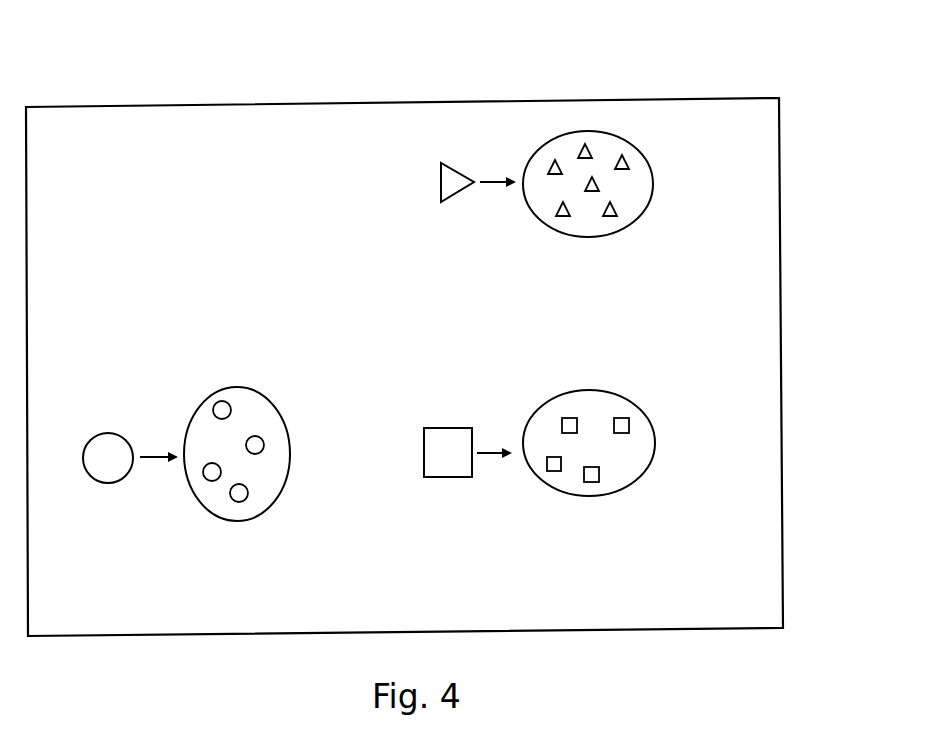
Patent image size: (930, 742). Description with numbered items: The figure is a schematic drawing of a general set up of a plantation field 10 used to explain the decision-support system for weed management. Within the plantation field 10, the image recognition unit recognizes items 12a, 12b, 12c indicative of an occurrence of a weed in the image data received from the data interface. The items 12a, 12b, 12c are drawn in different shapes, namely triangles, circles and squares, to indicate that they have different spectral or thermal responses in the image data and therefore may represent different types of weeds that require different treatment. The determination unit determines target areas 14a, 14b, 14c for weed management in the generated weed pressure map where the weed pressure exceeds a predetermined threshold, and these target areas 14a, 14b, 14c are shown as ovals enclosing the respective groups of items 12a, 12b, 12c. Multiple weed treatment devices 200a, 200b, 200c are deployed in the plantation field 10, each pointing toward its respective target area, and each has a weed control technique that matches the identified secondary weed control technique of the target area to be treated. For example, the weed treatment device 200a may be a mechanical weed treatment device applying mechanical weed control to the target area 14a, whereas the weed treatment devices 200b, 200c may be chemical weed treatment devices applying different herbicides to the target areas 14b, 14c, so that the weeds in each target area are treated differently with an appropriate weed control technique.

The plantation field 10 is at (722, 97).
The weed treatment device 200a is at (437, 181).
The item indicative of an occurrence of a weed 12a is at (629, 160).
The target area 14a is at (610, 237).
The weed treatment device 200b is at (113, 483).
The item indicative of an occurrence of a weed 12b is at (247, 502).
The target area 14b is at (258, 389).
The weed treatment device 200c is at (447, 478).
The item indicative of an occurrence of a weed 12c is at (591, 482).
The target area 14c is at (647, 417).